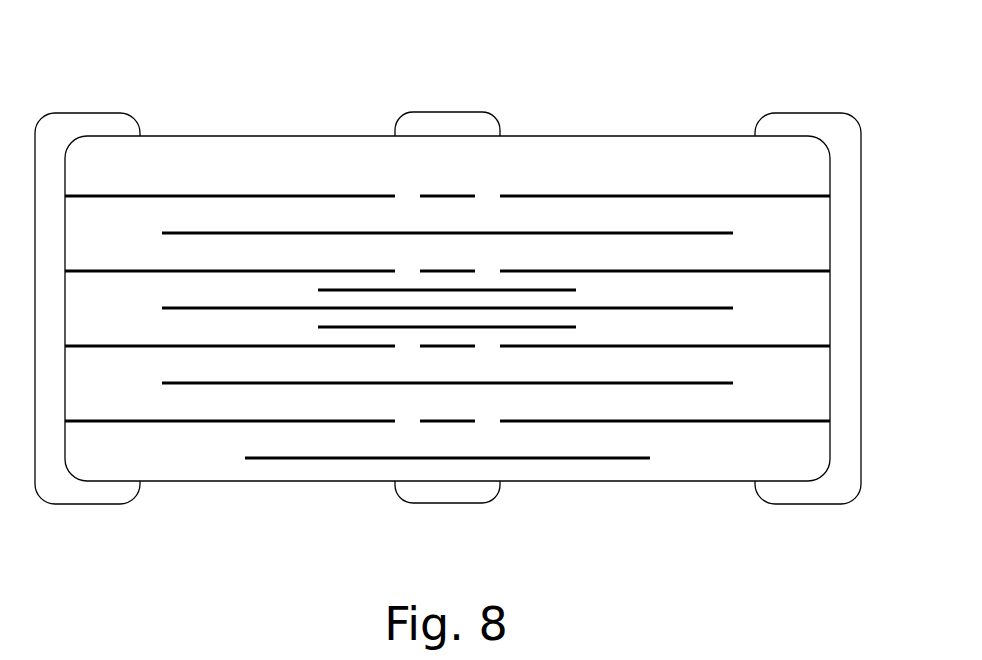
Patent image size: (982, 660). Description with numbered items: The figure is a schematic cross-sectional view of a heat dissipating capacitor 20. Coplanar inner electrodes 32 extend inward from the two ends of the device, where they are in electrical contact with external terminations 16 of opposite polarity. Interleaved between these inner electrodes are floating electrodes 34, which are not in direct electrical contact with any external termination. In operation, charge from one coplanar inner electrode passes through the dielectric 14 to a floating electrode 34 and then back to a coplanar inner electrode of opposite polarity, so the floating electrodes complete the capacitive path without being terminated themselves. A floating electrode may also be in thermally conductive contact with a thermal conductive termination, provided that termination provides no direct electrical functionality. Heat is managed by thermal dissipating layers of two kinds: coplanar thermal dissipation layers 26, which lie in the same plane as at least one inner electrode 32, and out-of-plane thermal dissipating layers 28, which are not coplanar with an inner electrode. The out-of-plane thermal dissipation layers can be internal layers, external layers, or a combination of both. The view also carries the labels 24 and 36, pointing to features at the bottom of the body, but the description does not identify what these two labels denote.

The dielectric 14 is at (175, 450).
The external terminations 16 is at (52, 455).
The heat dissipating capacitor 20 is at (708, 118).
The bottom protrusion 24 is at (463, 490).
The coplanar thermal dissipation layers 26 is at (463, 271).
The out-of-plane thermal dissipating layers 28 is at (330, 290).
The coplanar inner electrodes 32 is at (150, 346).
The floating electrodes 34 is at (240, 308).
The bottom shield electrode 36 is at (593, 460).